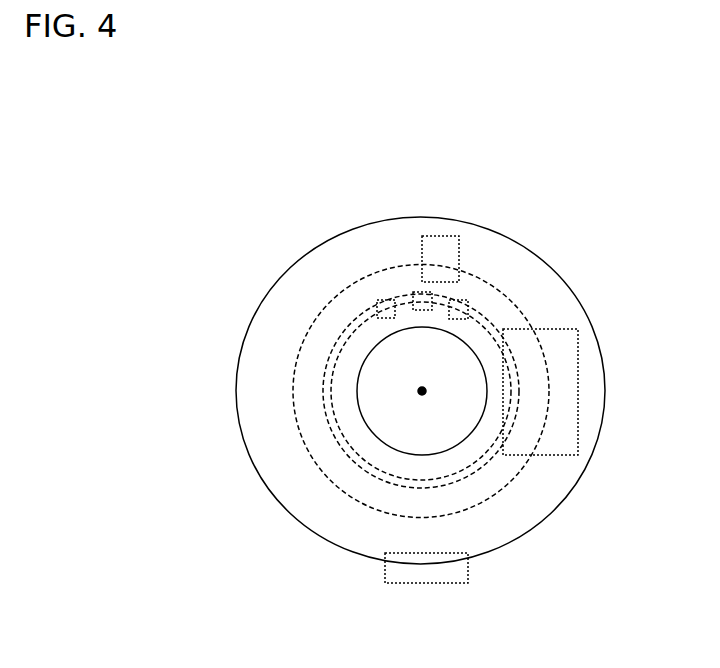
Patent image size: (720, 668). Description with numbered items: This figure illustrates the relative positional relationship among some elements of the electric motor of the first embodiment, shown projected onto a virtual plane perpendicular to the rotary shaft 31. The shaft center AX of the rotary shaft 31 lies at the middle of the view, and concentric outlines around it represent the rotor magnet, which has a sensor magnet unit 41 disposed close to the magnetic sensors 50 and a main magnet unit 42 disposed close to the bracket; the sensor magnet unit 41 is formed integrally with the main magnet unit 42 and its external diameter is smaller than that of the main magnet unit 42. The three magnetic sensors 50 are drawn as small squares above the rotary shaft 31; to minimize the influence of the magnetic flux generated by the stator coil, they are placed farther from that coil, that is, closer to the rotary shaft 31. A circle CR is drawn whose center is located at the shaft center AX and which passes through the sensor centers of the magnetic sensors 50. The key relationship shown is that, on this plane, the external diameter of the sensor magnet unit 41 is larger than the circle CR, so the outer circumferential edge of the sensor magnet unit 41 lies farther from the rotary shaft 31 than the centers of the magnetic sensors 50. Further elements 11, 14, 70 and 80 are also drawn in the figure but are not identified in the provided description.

The housing (outer body) 11 is at (585, 475).
The connector / terminal block 14 is at (433, 583).
The rotary shaft 31 is at (460, 443).
The sensor magnet unit 41 is at (322, 373).
The main magnet unit 42 is at (297, 410).
The magnetic sensors 50 is at (387, 300).
The circuit element / module 70 is at (443, 236).
The control unit / board 80 is at (572, 380).
The circle CR is at (345, 342).
The shaft center AX is at (422, 391).